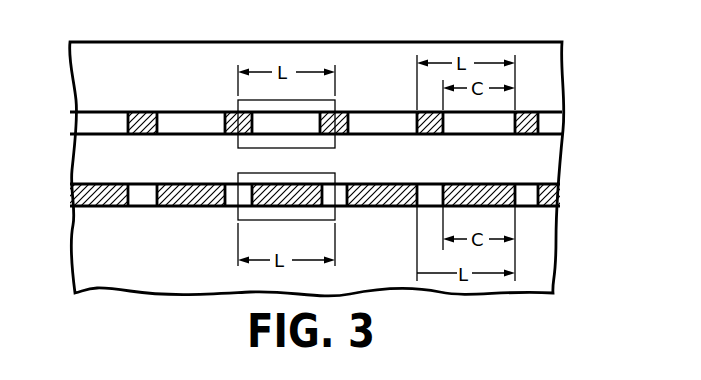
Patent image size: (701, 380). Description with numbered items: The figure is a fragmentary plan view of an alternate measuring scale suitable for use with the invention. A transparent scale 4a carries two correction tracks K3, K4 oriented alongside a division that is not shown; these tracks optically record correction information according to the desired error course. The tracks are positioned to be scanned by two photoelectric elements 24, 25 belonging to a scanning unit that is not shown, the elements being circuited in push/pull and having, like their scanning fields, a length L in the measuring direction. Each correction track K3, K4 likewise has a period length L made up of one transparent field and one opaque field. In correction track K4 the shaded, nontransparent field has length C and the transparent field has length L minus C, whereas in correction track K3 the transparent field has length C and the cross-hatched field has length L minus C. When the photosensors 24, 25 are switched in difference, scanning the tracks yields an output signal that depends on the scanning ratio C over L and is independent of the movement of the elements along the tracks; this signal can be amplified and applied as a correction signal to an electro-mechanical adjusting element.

The photoelectric element 24 is at (238, 105).
The photoelectric element 25 is at (238, 213).
The correction track K3 is at (555, 123).
The correction track K4 is at (555, 196).
The transparent scale 4a is at (548, 255).